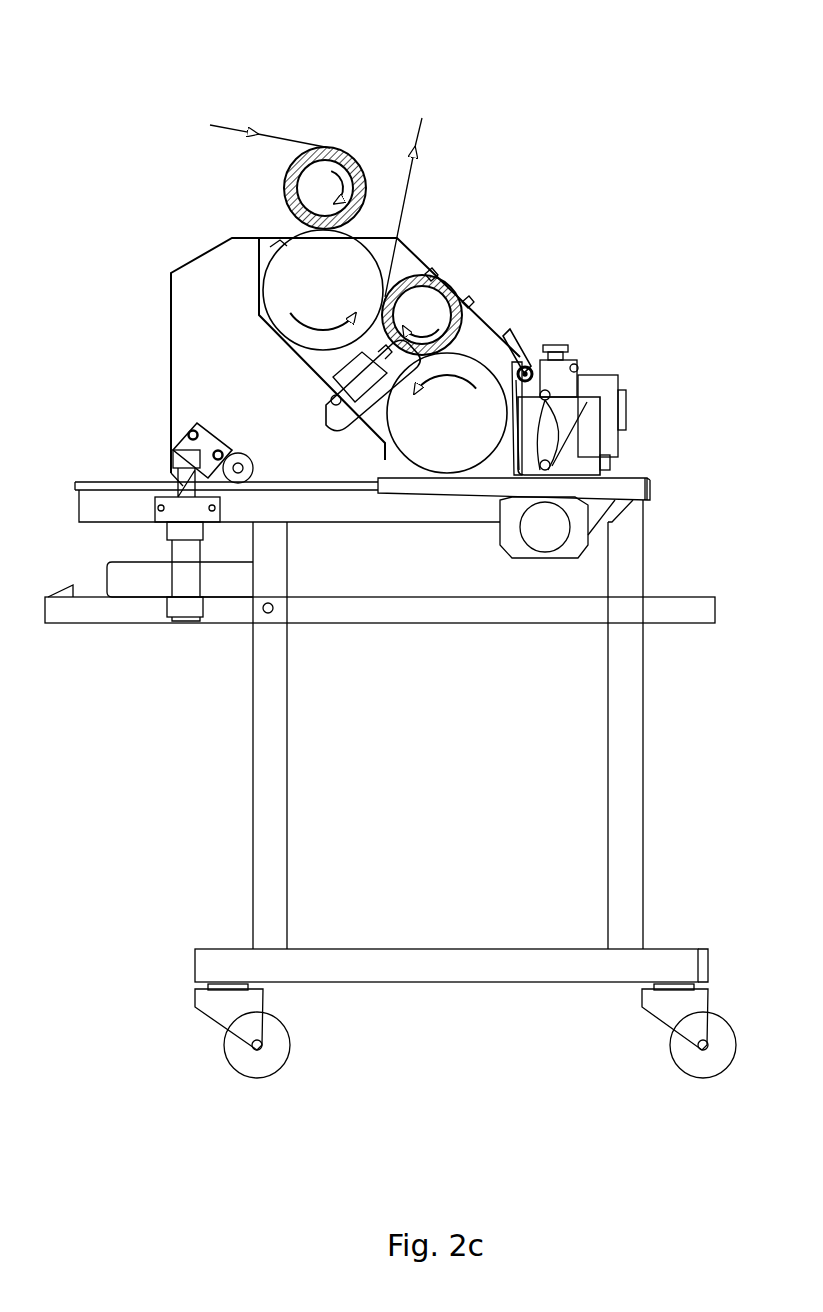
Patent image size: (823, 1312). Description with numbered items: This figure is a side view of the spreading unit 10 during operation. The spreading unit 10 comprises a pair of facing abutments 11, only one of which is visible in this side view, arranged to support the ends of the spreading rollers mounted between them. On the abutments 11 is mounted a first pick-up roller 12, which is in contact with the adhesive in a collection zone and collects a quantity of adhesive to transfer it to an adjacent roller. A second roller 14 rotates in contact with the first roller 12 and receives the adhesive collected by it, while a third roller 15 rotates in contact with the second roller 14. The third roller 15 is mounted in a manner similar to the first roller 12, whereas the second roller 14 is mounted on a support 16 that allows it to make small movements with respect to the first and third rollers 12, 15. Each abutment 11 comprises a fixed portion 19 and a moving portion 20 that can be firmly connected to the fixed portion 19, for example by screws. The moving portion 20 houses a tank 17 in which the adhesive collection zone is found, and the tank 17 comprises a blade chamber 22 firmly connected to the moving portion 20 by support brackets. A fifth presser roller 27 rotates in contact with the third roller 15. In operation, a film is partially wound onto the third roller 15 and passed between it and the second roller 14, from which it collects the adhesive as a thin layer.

The spreading unit 10 is at (545, 120).
The abutment 11 is at (165, 287).
The first pick-up roller 12 is at (443, 423).
The second roller 14 is at (434, 302).
The third roller 15 is at (293, 260).
The support 16 is at (355, 408).
The tank 17 is at (592, 355).
The fixed portion 19 is at (197, 405).
The moving portion 20 is at (612, 387).
The blade chamber 22 is at (582, 437).
The fifth presser roller 27 is at (332, 175).